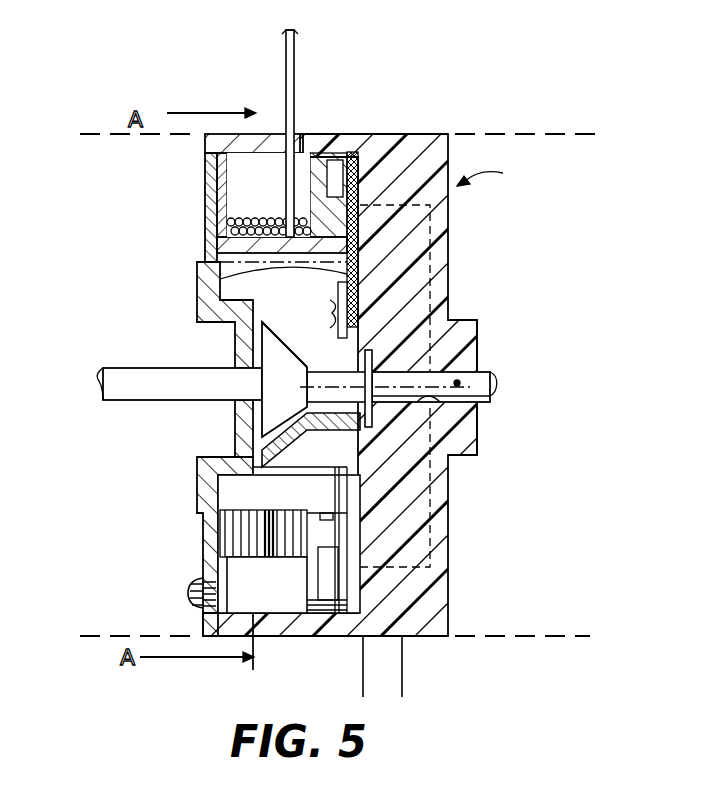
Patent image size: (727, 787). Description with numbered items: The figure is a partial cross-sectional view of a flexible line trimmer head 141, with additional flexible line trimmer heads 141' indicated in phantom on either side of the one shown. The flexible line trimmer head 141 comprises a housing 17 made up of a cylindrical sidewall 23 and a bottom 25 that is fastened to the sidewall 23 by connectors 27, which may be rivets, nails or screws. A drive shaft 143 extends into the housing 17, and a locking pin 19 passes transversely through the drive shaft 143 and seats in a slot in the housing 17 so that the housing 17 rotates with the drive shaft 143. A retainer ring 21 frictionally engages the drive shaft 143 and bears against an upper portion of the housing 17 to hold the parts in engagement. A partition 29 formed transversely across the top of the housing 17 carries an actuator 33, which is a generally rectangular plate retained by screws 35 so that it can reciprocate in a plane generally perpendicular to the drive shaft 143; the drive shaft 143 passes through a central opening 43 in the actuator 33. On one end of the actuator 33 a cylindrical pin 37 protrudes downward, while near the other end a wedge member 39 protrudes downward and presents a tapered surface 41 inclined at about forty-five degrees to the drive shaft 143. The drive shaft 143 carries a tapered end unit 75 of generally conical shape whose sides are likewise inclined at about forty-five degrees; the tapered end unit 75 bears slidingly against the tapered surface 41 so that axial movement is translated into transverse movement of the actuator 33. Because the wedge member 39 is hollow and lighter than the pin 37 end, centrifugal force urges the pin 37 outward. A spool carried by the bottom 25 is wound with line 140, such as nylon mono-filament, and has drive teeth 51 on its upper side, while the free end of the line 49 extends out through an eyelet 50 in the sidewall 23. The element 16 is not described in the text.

The line 140 is at (282, 35).
The eyelet 50 is at (255, 175).
The cylindrical pin 37 is at (345, 152).
The housing 17 is at (383, 134).
The flexible line trimmer head 141 is at (502, 187).
The section line 141' is at (372, 385).
The actuator 33 is at (198, 274).
The screws 35 is at (330, 299).
The tapered end unit 75 is at (273, 334).
The central opening 43 is at (338, 337).
The tapered surface 41 is at (253, 393).
The retainer ring 21 is at (392, 333).
The locking pin 19 is at (456, 381).
The drive shaft 143 is at (150, 400).
The bore 16 is at (440, 404).
The wedge member 39 is at (296, 445).
The bottom 25 is at (203, 528).
The free end of the line 49 is at (269, 557).
The connectors 27 is at (190, 600).
The cylindrical sidewall 23 is at (302, 637).
The drive teeth 51 is at (352, 600).
The partition 29 is at (378, 637).